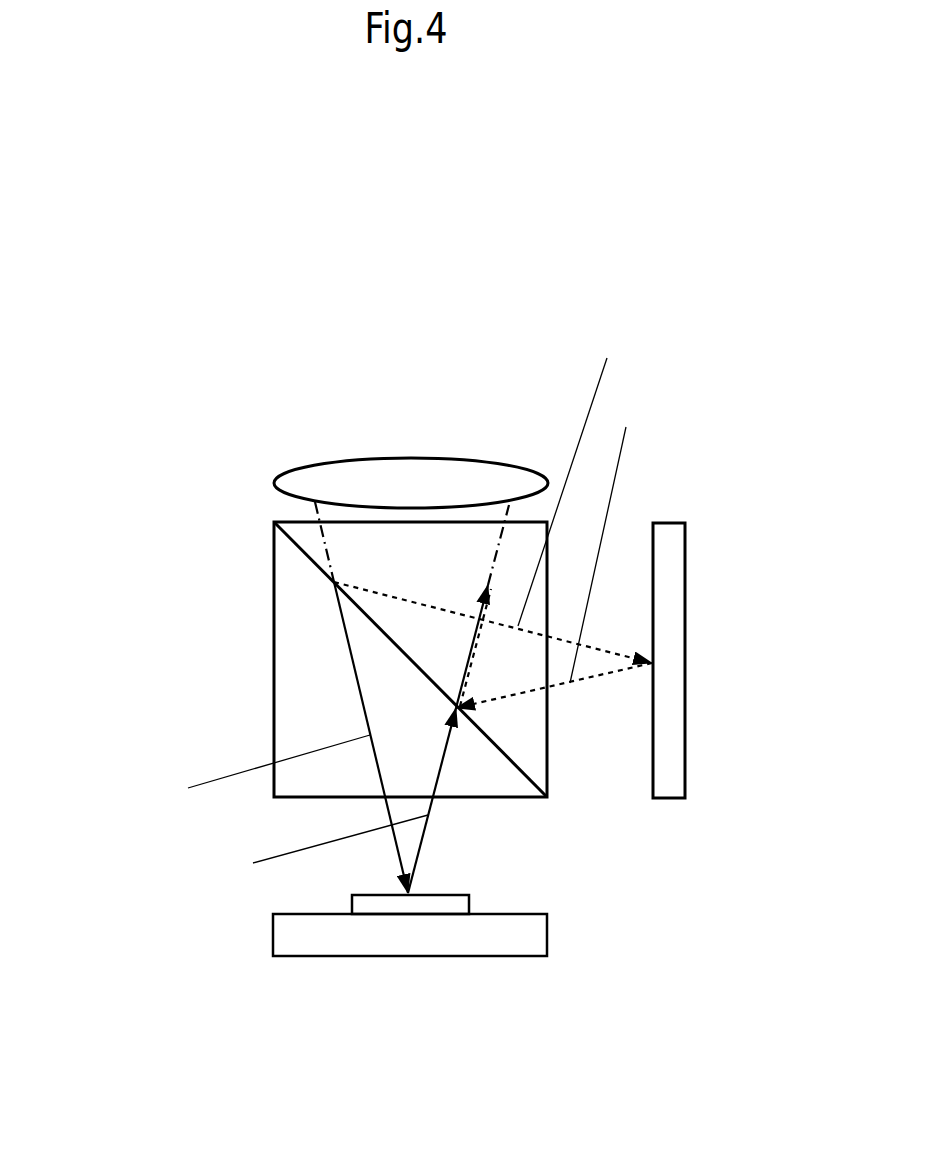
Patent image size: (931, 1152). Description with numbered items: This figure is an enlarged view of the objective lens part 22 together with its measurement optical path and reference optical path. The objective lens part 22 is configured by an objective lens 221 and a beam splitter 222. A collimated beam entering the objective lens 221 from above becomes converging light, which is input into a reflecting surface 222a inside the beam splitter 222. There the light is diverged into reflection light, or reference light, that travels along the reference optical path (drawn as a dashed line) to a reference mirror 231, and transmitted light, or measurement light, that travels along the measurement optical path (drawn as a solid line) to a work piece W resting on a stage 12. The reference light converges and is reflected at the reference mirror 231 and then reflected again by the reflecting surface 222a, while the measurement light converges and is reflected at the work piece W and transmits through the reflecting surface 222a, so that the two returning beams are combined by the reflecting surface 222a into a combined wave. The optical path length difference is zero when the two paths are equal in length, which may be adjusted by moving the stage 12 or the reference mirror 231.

The objective lens part 22 is at (433, 244).
The objective lens 221 is at (300, 468).
The beam splitter 222 is at (273, 627).
The reflecting surface 222a is at (308, 558).
The reference mirror 231 is at (663, 800).
The work piece W is at (438, 895).
The stage 12 is at (532, 913).